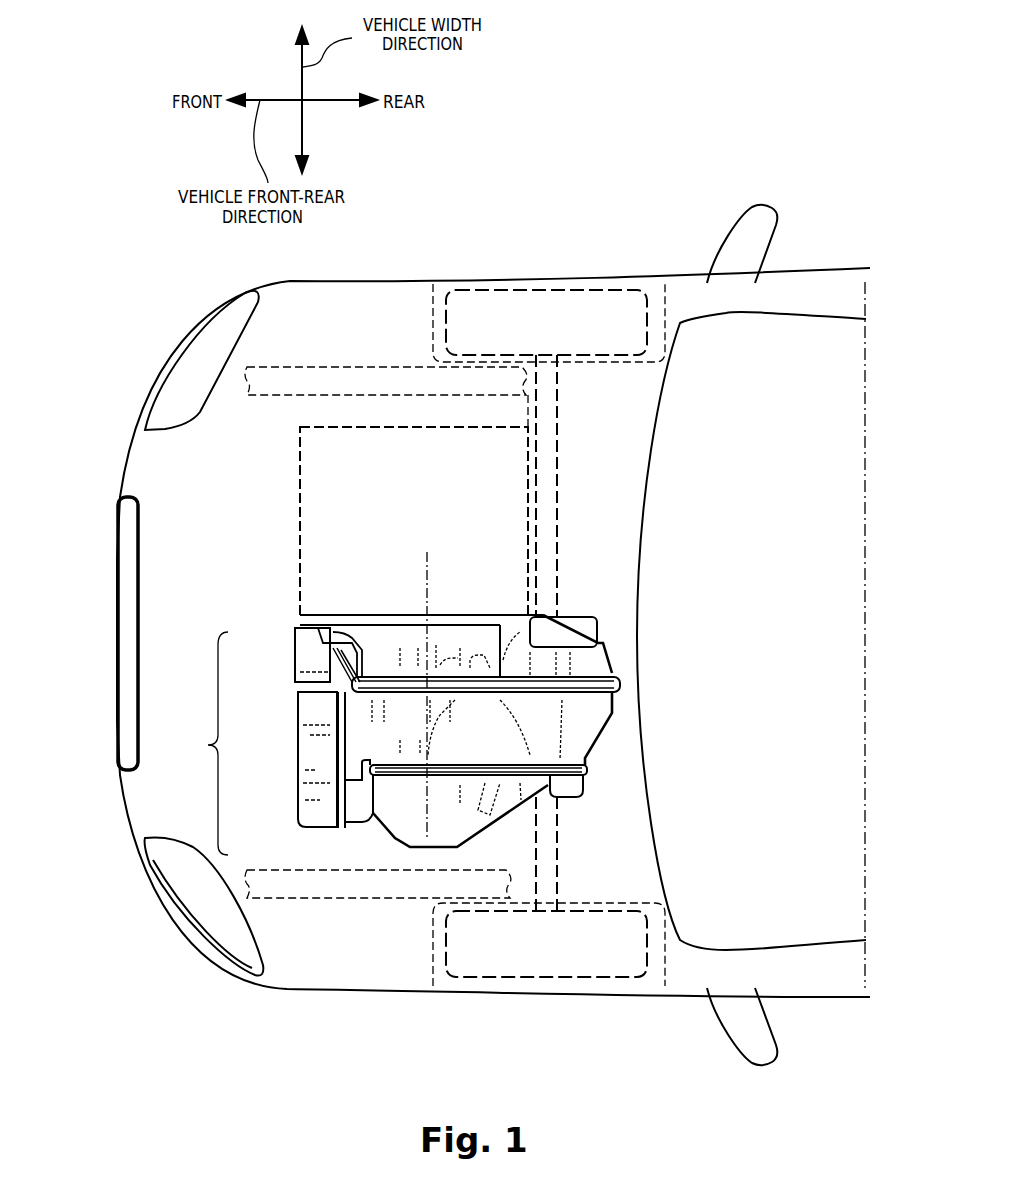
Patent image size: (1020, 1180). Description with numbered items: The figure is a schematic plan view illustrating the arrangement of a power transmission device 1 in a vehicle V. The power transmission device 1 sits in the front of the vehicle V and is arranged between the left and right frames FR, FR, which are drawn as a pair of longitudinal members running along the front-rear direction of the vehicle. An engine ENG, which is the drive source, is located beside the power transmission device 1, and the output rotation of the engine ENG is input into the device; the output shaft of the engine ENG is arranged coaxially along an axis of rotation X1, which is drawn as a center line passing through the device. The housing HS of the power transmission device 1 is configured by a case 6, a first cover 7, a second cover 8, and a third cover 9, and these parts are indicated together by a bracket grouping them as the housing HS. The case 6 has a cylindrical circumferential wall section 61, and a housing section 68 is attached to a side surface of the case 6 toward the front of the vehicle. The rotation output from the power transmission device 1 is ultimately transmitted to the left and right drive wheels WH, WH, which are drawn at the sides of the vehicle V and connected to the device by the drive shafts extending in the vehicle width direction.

The vehicle V is at (167, 343).
The power transmission device 1 is at (258, 607).
The housing HS is at (200, 743).
The case 6 is at (362, 707).
The first cover 7 is at (370, 787).
The second cover 8 is at (330, 660).
The third cover 9 is at (313, 772).
The circumferential wall section 61 is at (597, 717).
The housing section 68 is at (357, 823).
The engine ENG is at (300, 465).
The frame FR is at (385, 367).
The drive wheel WH is at (563, 310).
The axis of rotation X1 is at (426, 680).